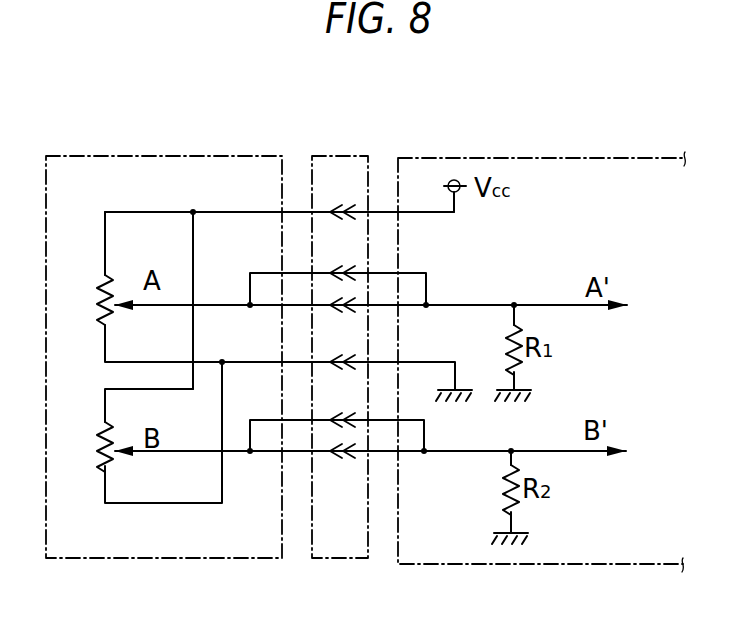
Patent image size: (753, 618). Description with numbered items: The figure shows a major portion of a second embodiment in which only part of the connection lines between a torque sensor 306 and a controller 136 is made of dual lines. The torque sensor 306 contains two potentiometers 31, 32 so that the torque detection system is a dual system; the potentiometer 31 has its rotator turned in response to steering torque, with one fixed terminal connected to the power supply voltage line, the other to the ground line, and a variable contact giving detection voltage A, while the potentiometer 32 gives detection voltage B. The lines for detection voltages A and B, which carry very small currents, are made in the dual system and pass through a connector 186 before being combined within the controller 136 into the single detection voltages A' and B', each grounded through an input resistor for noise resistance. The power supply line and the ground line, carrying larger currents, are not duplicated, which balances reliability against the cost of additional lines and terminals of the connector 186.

The torque sensor 306 is at (201, 156).
The connector 186 is at (340, 156).
The controller 136 is at (540, 158).
The potentiometer 31 is at (100, 290).
The potentiometer 32 is at (100, 432).